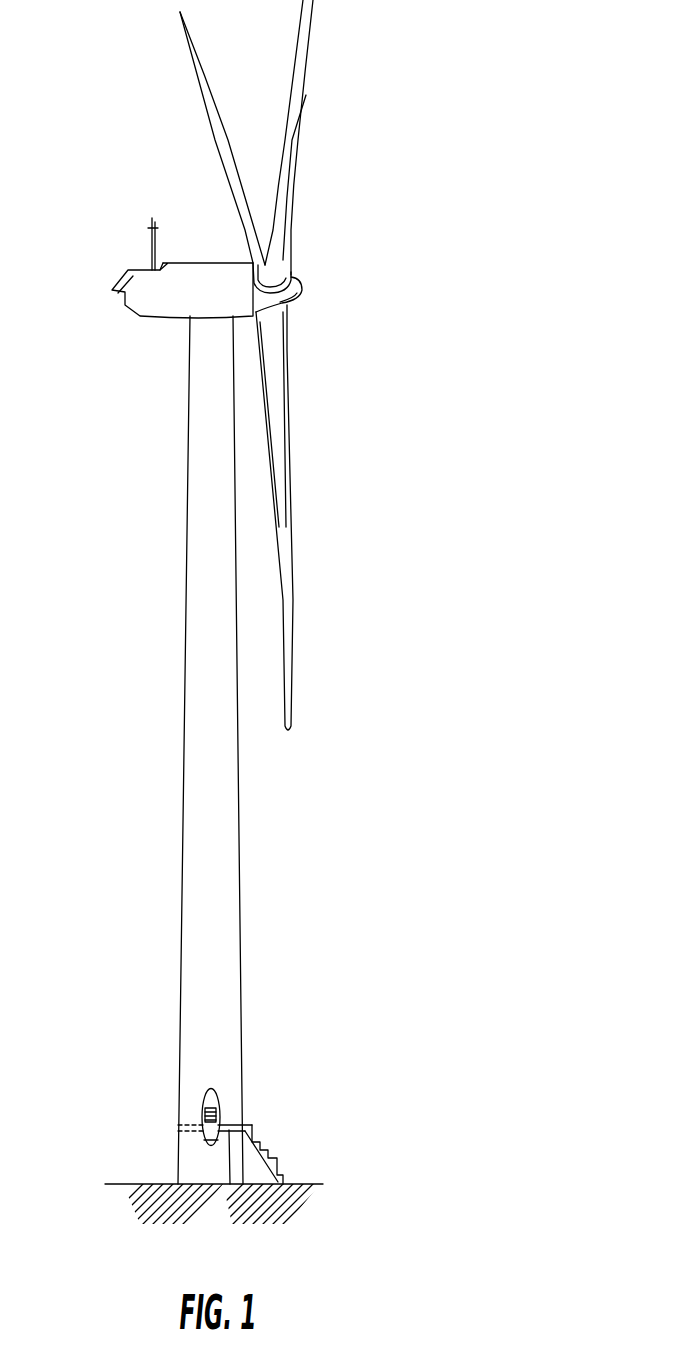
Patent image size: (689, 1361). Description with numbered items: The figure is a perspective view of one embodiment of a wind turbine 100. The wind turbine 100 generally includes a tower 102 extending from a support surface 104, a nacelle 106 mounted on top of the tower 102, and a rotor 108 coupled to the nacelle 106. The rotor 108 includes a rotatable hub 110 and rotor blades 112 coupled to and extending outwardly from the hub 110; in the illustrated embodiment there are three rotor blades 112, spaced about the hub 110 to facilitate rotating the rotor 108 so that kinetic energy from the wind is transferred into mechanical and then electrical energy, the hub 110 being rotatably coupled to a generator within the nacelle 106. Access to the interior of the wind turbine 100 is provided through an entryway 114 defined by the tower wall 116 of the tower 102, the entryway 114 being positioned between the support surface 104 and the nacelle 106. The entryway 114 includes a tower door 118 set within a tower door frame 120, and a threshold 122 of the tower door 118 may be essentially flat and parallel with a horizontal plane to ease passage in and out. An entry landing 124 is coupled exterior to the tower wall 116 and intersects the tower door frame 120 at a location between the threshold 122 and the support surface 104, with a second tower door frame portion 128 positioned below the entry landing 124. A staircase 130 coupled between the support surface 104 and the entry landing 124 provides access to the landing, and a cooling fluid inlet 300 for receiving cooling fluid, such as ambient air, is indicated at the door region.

The wind turbine 100 is at (447, 90).
The tower 102 is at (222, 822).
The support surface 104 is at (122, 1183).
The nacelle 106 is at (160, 317).
The rotor 108 is at (343, 247).
The rotatable hub 110 is at (303, 284).
The rotor blade 112 is at (290, 107).
The entryway 114 is at (197, 1087).
The tower wall 116 is at (208, 1018).
The tower door 118 is at (216, 1098).
The tower door frame 120 is at (211, 1089).
The threshold 122 is at (201, 1122).
The entry landing 124 is at (230, 1184).
The second tower door frame portion 128 is at (208, 1143).
The staircase 130 is at (279, 1172).
The cooling fluid inlet 300 is at (223, 1117).